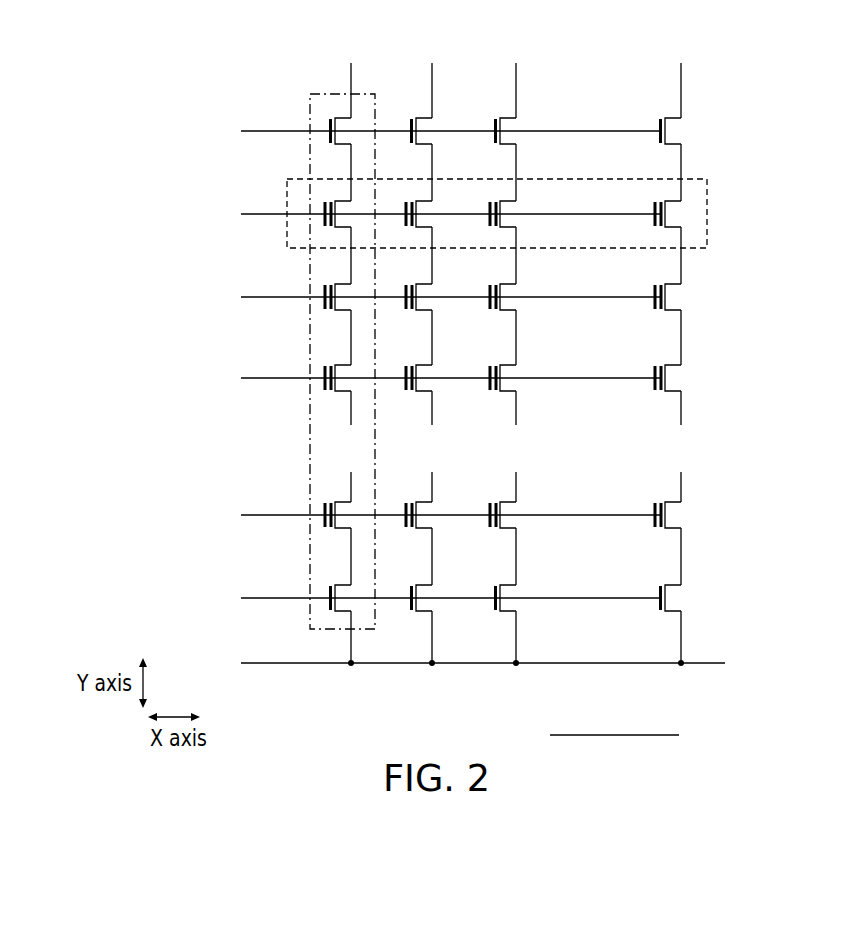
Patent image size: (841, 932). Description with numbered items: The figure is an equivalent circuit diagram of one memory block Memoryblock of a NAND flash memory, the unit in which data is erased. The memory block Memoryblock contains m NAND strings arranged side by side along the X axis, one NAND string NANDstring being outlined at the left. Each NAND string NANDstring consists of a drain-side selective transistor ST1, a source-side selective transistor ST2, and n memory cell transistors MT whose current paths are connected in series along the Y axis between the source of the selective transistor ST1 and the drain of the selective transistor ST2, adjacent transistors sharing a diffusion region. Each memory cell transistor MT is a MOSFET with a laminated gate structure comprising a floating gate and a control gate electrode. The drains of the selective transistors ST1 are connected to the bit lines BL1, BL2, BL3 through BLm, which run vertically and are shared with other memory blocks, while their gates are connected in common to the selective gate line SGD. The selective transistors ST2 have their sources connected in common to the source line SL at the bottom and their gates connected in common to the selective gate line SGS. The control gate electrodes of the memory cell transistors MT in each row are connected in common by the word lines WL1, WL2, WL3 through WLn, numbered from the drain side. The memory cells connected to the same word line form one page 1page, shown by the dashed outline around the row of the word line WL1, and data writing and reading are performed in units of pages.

The bit line BL1 is at (350, 347).
The bit line BL2 is at (428, 347).
The bit line BL3 is at (511, 347).
The bit line BLm is at (677, 347).
The selective gate line SGD is at (423, 132).
The word line WL1 is at (425, 214).
The word line WL2 is at (425, 297).
The word line WL3 is at (425, 378).
The word line WLn is at (424, 516).
The selective gate line SGS is at (423, 598).
The source line SL is at (465, 664).
The selective transistor ST1 is at (519, 125).
The memory cell transistor MT is at (519, 205).
The selective transistor ST2 is at (520, 590).
The NAND string NANDstring is at (323, 630).
The page 1page is at (708, 208).
The memory block Memoryblock is at (614, 720).